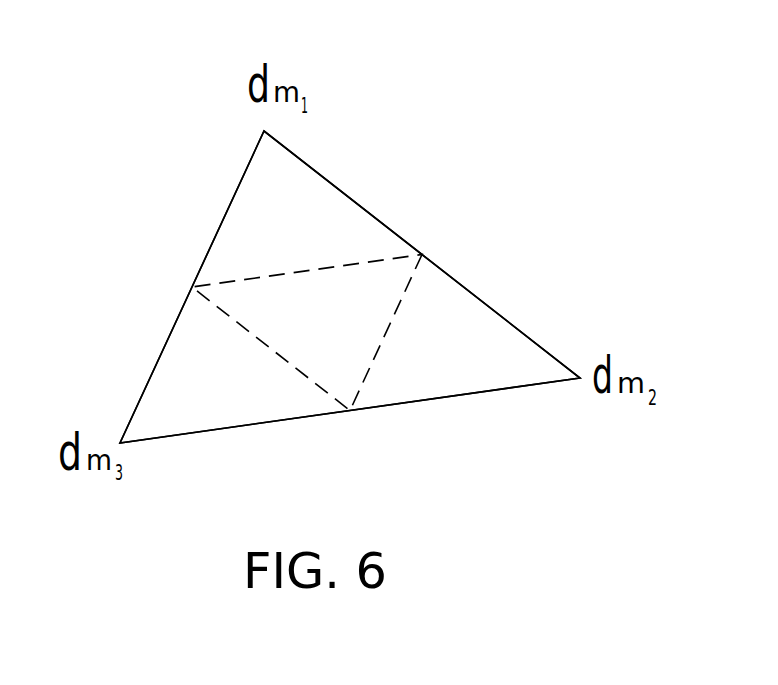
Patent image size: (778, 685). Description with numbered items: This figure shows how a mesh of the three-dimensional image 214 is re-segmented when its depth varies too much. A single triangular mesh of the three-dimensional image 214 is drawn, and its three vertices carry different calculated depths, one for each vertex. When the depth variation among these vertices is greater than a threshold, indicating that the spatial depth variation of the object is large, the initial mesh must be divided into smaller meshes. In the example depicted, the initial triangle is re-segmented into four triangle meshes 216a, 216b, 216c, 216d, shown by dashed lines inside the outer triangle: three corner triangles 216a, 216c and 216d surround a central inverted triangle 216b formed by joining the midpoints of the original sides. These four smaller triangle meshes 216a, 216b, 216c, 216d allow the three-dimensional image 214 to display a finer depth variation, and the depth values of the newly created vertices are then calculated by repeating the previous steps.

The 3-D image 214 is at (323, 177).
The triangle mesh 216a is at (312, 240).
The triangle mesh 216b is at (352, 328).
The triangle mesh 216c is at (485, 363).
The triangle mesh 216d is at (233, 392).